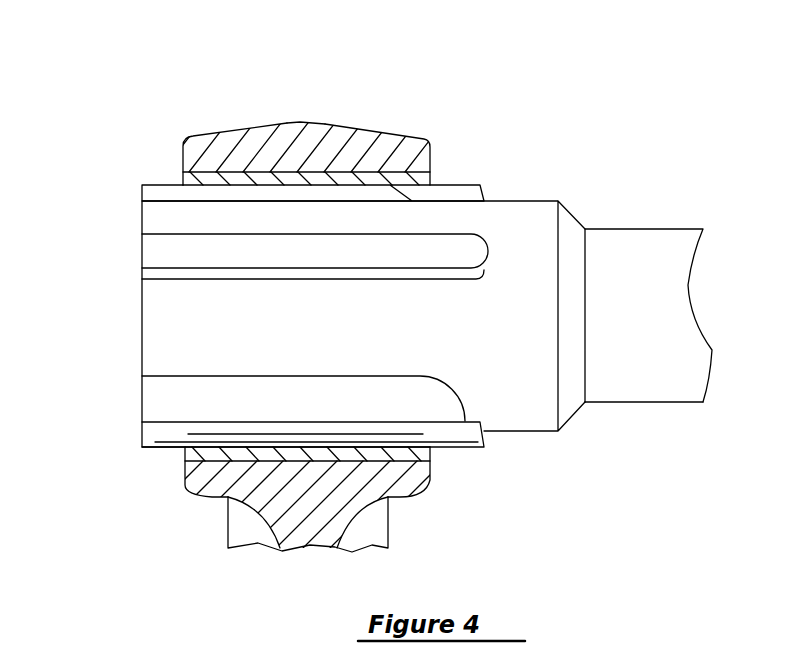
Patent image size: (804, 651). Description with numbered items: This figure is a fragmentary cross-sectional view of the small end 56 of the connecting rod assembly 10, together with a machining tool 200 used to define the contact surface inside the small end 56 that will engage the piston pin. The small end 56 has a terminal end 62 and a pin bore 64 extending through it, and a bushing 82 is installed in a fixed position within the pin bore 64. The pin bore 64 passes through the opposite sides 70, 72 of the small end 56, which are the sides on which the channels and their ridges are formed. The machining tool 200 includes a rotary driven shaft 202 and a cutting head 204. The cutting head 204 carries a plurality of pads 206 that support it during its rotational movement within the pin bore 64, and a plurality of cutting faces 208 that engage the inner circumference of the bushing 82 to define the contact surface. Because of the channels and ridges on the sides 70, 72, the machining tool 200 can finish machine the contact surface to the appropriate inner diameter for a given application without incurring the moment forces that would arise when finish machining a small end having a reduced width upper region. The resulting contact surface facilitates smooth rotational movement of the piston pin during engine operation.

The connecting rod assembly 10 is at (138, 113).
The small end 56 is at (215, 120).
The terminal end 62 is at (290, 122).
The bushing 82 is at (172, 176).
The pin bore 64 is at (150, 457).
The side of the small end 70 is at (183, 487).
The side of the small end 72 is at (430, 485).
The machining tool 200 is at (681, 212).
The rotary driven shaft 202 is at (657, 385).
The cutting head 204 is at (142, 322).
The pads 206 is at (465, 248).
The cutting faces 208 is at (460, 185).